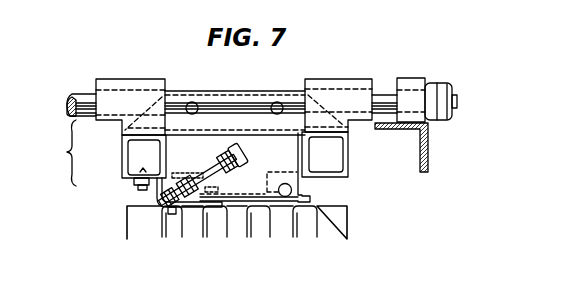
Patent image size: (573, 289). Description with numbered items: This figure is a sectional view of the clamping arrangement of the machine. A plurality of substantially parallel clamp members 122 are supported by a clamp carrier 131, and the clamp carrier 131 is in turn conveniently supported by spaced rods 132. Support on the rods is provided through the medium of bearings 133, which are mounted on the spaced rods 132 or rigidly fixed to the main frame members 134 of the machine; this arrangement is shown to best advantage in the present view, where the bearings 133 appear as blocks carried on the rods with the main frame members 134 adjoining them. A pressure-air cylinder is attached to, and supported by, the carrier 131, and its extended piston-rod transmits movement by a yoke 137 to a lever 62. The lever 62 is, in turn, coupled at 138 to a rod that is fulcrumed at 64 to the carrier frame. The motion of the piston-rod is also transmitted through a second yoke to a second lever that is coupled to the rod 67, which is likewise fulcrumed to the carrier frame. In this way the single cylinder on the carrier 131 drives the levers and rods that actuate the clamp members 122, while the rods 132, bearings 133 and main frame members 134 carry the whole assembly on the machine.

The clamp carrier 131 is at (66, 157).
The bearings 133 is at (133, 79).
The spaced rods 132 is at (247, 91).
The main frame members 134 is at (428, 152).
The coupling 138 is at (190, 206).
The lever 62 is at (222, 166).
The yoke 137 is at (248, 151).
The rod 67 is at (292, 190).
The clamp member 122 is at (340, 220).
The fulcrum 64 is at (171, 216).